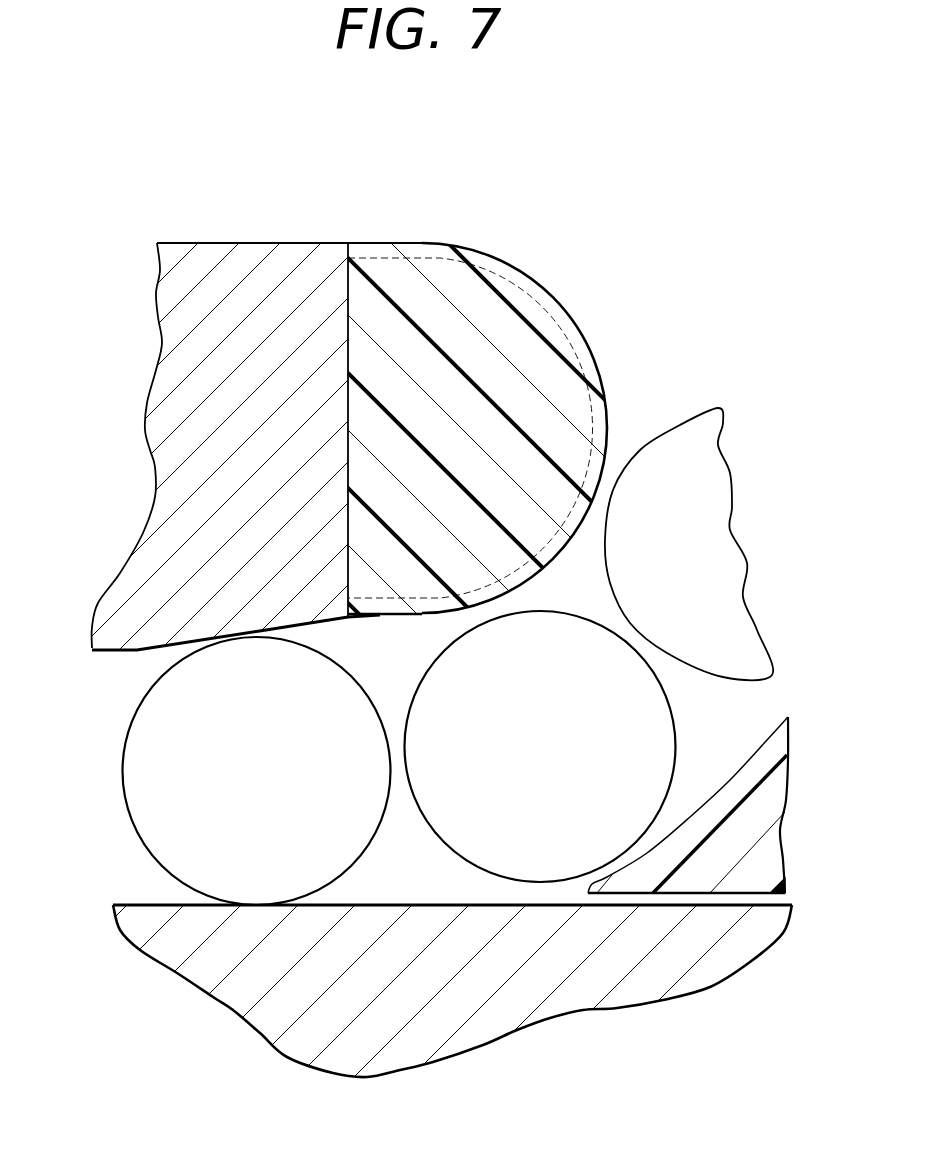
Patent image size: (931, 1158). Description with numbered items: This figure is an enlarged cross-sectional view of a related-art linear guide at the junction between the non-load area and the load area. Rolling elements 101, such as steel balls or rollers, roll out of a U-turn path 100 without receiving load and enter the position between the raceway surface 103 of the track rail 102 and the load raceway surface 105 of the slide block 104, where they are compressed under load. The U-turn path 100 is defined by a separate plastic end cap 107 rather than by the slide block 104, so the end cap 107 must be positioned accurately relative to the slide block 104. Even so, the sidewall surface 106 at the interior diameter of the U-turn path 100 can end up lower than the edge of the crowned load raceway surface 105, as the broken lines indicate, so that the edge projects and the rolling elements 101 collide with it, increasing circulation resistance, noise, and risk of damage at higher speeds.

The U-turn path 100 is at (715, 763).
The rolling elements 101 is at (147, 795).
The track rail 102 is at (237, 1000).
The raceway surface 103 is at (170, 905).
The slide block 104 is at (252, 243).
The load raceway surface 105 is at (120, 650).
The sidewall surface 106 is at (388, 620).
The end cap 107 is at (522, 333).